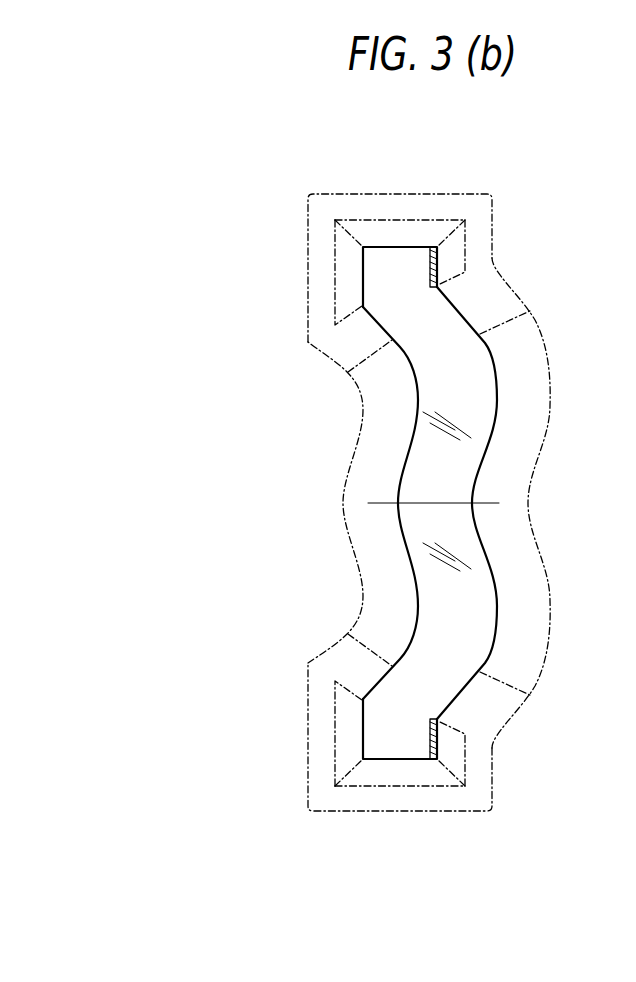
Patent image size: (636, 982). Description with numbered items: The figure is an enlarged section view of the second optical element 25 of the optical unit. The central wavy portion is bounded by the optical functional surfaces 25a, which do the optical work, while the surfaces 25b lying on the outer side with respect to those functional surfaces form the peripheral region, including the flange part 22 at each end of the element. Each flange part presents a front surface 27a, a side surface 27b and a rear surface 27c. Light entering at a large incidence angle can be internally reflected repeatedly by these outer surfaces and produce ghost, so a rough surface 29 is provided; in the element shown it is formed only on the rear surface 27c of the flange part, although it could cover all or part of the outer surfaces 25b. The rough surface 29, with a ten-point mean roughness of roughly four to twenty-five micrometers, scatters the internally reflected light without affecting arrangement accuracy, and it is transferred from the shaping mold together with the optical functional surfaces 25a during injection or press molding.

The flange part 22 is at (373, 257).
The second optical element 25 is at (426, 505).
The optical functional surface 25a is at (343, 535).
The surface located on the outer side with respect to the optical functional surface 25b is at (403, 193).
The front surface of flange part 27a is at (336, 260).
The side surface of flange part 27b is at (440, 218).
The rear surface of flange part 27c is at (466, 235).
The rough surface 29 is at (438, 267).